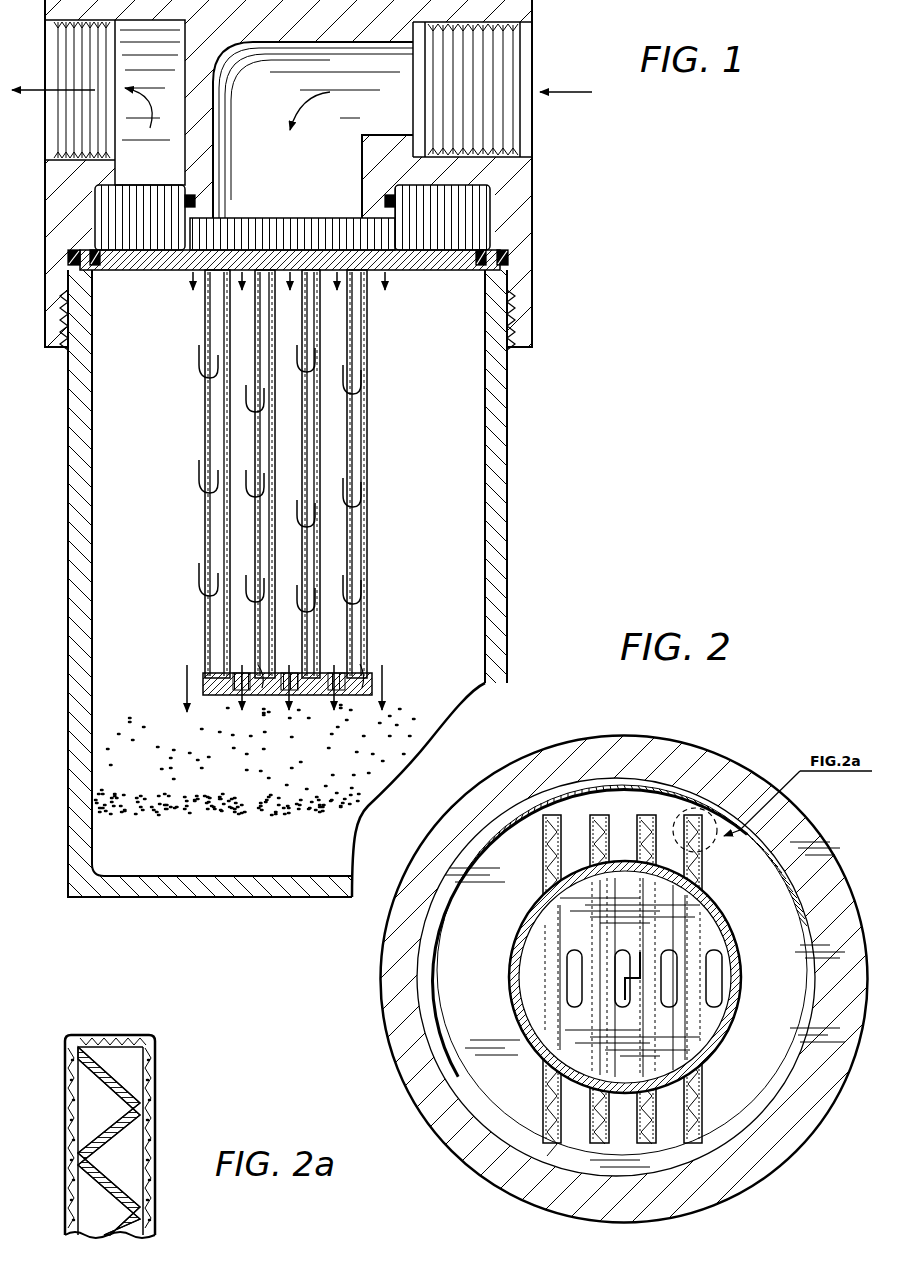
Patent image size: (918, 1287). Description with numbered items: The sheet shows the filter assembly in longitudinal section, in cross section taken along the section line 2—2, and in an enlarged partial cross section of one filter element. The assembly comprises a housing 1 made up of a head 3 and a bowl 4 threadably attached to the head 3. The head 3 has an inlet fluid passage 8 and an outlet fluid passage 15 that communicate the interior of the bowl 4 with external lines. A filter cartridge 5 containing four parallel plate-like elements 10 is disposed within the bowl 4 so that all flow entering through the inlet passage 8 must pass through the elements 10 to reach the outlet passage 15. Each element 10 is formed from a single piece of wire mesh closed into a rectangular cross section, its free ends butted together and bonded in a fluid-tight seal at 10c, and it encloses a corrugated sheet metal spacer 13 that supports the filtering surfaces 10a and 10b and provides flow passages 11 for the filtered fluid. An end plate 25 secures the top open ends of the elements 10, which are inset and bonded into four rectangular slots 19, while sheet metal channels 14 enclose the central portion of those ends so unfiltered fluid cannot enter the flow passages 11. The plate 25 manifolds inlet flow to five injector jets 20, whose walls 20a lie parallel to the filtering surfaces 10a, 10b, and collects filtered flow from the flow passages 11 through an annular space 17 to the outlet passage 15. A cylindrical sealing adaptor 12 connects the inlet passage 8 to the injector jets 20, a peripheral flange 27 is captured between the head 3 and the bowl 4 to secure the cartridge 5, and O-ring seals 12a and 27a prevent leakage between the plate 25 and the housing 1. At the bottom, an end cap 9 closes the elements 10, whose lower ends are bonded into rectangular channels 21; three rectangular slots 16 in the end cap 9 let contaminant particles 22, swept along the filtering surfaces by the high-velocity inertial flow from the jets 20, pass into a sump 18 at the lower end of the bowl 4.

In FIG. 1, the housing 1 is at (538, 184).
In FIG. 1, the section line 2— 2 is at (46, 220).
In FIG. 2, the head 3 is at (640, 723).
In FIG. 1, the bowl 4 is at (500, 428).
In FIG. 1, the filter cartridge 5 is at (202, 408).
In FIG. 1, the inlet fluid passage 8 is at (500, 52).
In FIG. 1, the end cap 9 is at (203, 688).
In FIG. 1, the plate-like element 10 is at (252, 544).
In FIG. 2, the plate-like element 10 is at (540, 870).
In FIG. 2a, the plate-like element 10 is at (165, 1030).
In FIG. 1, the filtering surface 10a is at (324, 340).
In FIG. 2, the filtering surface 10a is at (690, 815).
In FIG. 2a, the filtering surface 10a is at (157, 1062).
In FIG. 1, the filtering surface 10b is at (372, 310).
In FIG. 2, the filtering surface 10b is at (616, 815).
In FIG. 2a, the filtering surface 10b is at (66, 1068).
In FIG. 2, the fluid-tight seal 10c is at (655, 815).
In FIG. 2a, the fluid-tight seal 10c is at (112, 1035).
In FIG. 1, the flow passages 11 is at (352, 398).
In FIG. 2, the flow passages 11 is at (665, 1106).
In FIG. 2a, the flow passages 11 is at (130, 1136).
In FIG. 1, the cylindrical sealing adaptor 12 is at (398, 205).
In FIG. 2, the cylindrical sealing adaptor 12 is at (738, 978).
In FIG. 1, the O-ring seal 12a is at (386, 198).
In FIG. 1, the corrugated sheet metal spacer 13 is at (312, 575).
In FIG. 2, the corrugated sheet metal spacer 13 is at (590, 1114).
In FIG. 2a, the corrugated sheet metal spacer 13 is at (100, 1136).
In FIG. 1, the sheet metal channels 14 is at (360, 246).
In FIG. 2, the sheet metal channels 14 is at (640, 1032).
In FIG. 1, the outlet fluid passage 15 is at (80, 62).
In FIG. 1, the rectangular slots 16 is at (232, 695).
In FIG. 1, the annular space 17 is at (138, 234).
In FIG. 2, the annular space 17 is at (528, 976).
In FIG. 1, the sump 18 is at (100, 834).
In FIG. 2, the rectangular slots 19 is at (565, 800).
In FIG. 1, the injector jets 20 is at (292, 246).
In FIG. 2, the injector jets 20 is at (716, 962).
In FIG. 1, the injector jet walls 20a is at (238, 246).
In FIG. 2, the injector jet walls 20a is at (576, 985).
In FIG. 1, the rectangular channels 21 is at (266, 676).
In FIG. 1, the contaminant particles 22 is at (192, 776).
In FIG. 1, the end plate 25 is at (422, 272).
In FIG. 2, the end plate 25 is at (546, 935).
In FIG. 1, the peripheral flange 27 is at (82, 236).
In FIG. 2, the peripheral flange 27 is at (745, 802).
In FIG. 1, the O-ring seal 27a is at (470, 284).